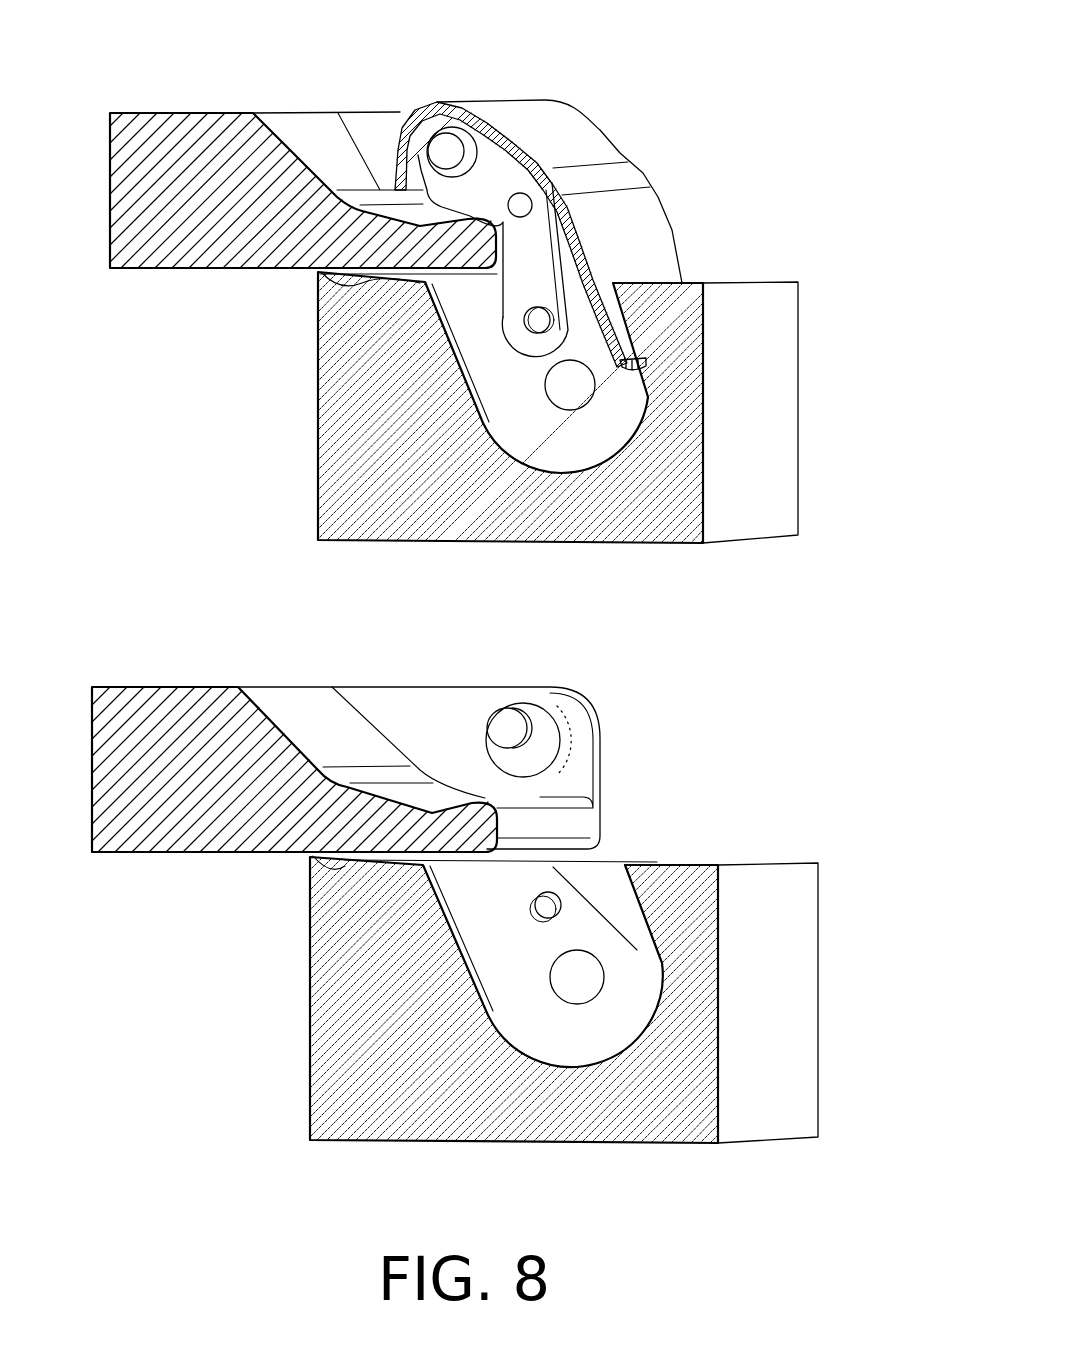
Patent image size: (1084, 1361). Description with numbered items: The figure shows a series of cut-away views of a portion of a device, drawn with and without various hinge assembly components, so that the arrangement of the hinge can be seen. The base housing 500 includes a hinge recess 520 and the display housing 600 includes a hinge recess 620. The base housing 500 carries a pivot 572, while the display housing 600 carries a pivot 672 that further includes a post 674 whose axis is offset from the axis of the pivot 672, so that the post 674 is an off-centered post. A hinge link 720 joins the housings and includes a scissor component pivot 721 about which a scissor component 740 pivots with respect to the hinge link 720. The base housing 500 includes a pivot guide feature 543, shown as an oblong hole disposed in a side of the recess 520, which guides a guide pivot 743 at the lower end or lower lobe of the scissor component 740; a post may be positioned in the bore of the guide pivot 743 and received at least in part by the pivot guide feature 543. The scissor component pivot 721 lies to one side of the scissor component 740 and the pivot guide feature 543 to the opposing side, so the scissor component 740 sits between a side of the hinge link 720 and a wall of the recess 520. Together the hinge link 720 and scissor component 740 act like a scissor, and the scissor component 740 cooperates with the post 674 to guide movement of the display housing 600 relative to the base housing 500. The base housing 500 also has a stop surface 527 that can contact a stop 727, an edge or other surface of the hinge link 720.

The base housing 500 is at (800, 318).
The hinge recess 520 is at (608, 874).
The stop surface 527 is at (627, 360).
The pivot guide feature 543 is at (557, 920).
The pivot 572 is at (597, 387).
The display housing 600 is at (240, 112).
The hinge recess 620 is at (383, 115).
The pivot 672 is at (543, 707).
The post 674 is at (442, 147).
The hinge link 720 is at (580, 140).
The scissor component pivot 721 is at (531, 201).
The stop 727 is at (627, 360).
The scissor component 740 is at (547, 240).
The guide pivot 743 is at (537, 333).